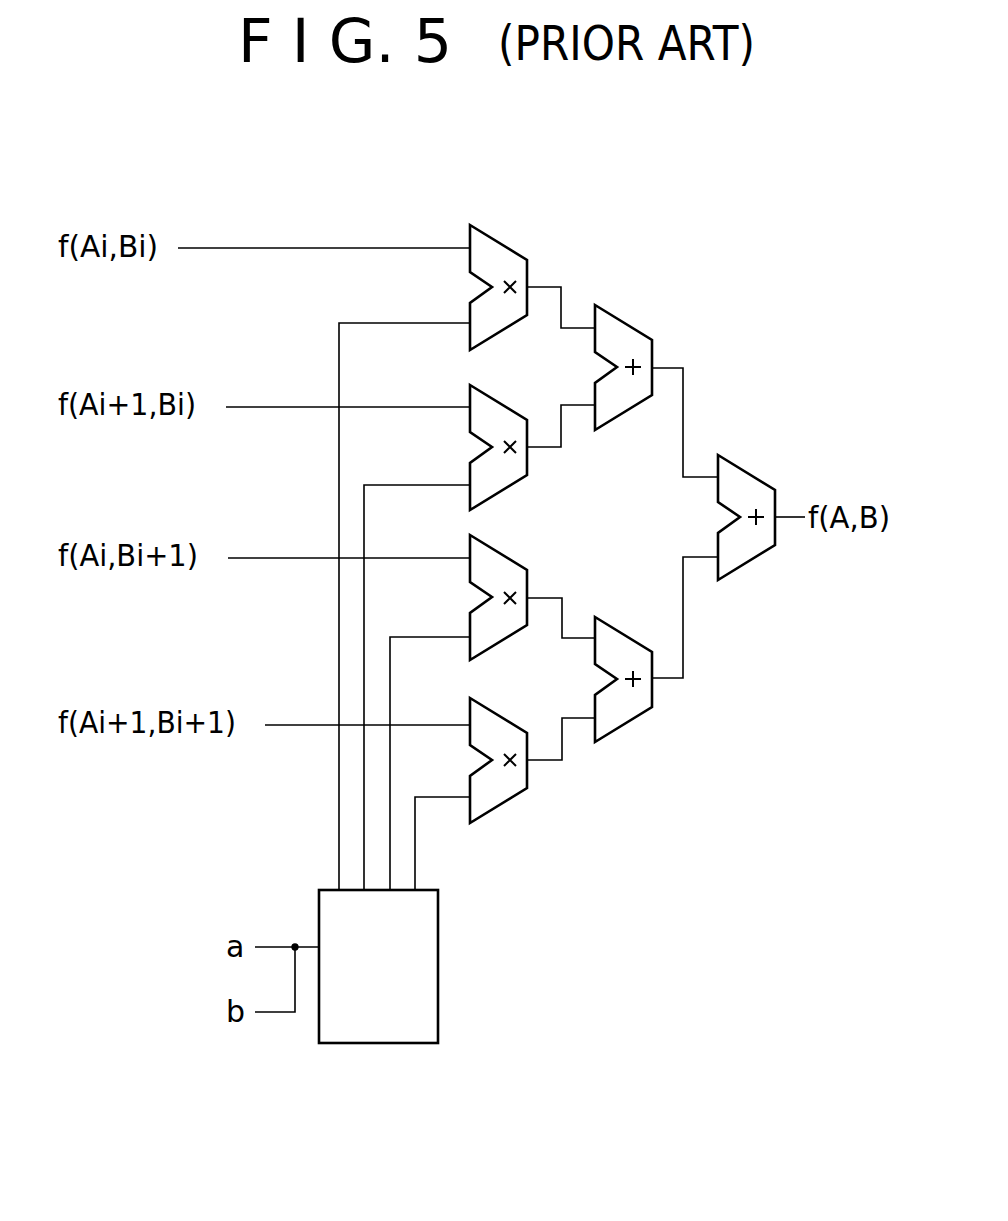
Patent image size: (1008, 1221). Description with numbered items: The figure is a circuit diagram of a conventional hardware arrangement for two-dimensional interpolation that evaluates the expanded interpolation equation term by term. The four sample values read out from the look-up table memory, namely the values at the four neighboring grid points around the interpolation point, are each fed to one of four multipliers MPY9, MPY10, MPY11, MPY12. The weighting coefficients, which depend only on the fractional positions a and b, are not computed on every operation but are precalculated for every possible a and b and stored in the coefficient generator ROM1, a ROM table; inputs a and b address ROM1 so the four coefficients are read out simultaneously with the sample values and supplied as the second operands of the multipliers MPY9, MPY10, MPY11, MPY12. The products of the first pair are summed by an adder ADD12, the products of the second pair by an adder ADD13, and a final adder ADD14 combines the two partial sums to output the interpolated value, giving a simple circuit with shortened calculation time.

The multiplier MPY9 is at (507, 245).
The multiplier MPY10 is at (502, 496).
The multiplier MPY11 is at (498, 551).
The multiplier MPY12 is at (503, 802).
The adder ADD12 is at (628, 327).
The adder ADD13 is at (625, 720).
The adder ADD14 is at (752, 473).
The coefficient generator (ROM table) ROM1 is at (438, 959).